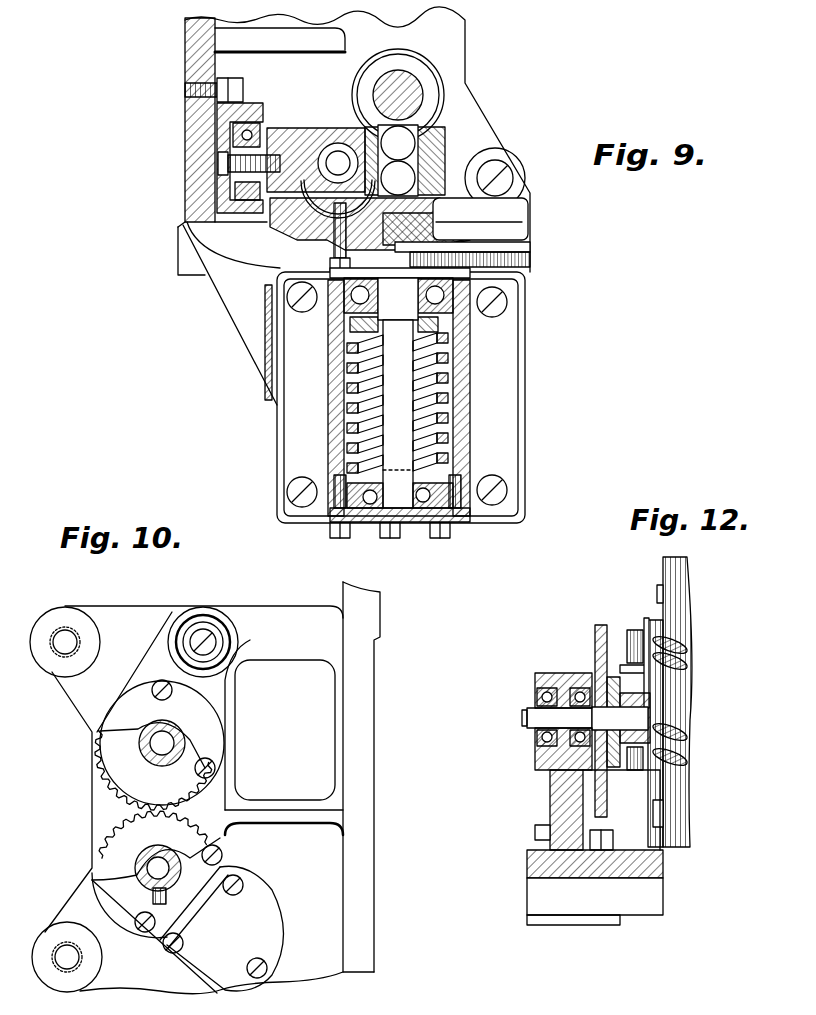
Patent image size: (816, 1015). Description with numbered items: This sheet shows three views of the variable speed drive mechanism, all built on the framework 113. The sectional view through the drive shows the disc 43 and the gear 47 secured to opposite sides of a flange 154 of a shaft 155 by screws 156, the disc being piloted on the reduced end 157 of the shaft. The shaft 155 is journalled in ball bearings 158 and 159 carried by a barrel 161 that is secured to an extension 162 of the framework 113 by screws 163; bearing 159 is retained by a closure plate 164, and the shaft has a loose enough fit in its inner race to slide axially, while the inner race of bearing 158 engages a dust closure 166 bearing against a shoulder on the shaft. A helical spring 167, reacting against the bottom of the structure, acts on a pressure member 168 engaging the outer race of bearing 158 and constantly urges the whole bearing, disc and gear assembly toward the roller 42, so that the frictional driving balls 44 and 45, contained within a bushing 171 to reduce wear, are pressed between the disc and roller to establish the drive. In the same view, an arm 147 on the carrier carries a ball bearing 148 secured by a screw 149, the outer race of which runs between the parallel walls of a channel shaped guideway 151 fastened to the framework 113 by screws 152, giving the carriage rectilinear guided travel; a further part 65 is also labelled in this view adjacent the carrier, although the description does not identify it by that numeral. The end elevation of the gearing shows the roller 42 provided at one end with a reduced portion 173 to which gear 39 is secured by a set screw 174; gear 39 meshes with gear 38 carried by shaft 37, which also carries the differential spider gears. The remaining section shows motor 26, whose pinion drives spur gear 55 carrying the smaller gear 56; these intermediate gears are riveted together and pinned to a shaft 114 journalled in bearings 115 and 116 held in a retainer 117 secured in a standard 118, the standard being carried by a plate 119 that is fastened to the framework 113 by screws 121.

In FIG. 9, the framework 113 is at (190, 45).
In FIG. 10, the framework 113 is at (363, 912).
In FIG. 12, the framework 113 is at (567, 903).
In FIG. 9, the screws 152 is at (188, 90).
In FIG. 9, the channel shaped guideway 151 is at (217, 117).
In FIG. 9, the screw 149 is at (218, 163).
In FIG. 9, the ball bearing 148 is at (237, 187).
In FIG. 9, the arm 147 is at (268, 133).
In FIG. 9, the shaft hub 65 is at (338, 157).
In FIG. 9, the roller 42 is at (405, 78).
In FIG. 9, the frictional driving ball 45 is at (405, 127).
In FIG. 9, the bushing 171 is at (398, 173).
In FIG. 9, the frictional driving ball 44 is at (430, 158).
In FIG. 9, the reduced end 157 is at (430, 217).
In FIG. 9, the disc 43 is at (512, 215).
In FIG. 9, the flange 154 is at (518, 247).
In FIG. 9, the gear 47 is at (530, 258).
In FIG. 9, the screws 156 is at (270, 267).
In FIG. 9, the dust closure 166 is at (477, 277).
In FIG. 9, the ball bearing 158 is at (347, 300).
In FIG. 9, the pressure member 168 is at (348, 328).
In FIG. 9, the screws 163 is at (288, 300).
In FIG. 9, the extension 162 is at (255, 352).
In FIG. 9, the helical spring 167 is at (348, 397).
In FIG. 9, the shaft 155 is at (400, 385).
In FIG. 9, the barrel 161 is at (462, 427).
In FIG. 9, the closure plate 164 is at (360, 527).
In FIG. 9, the ball bearing 159 is at (423, 500).
In FIG. 10, the gear 38 is at (115, 770).
In FIG. 10, the shaft 37 is at (160, 745).
In FIG. 10, the gear 39 is at (117, 842).
In FIG. 10, the reduced portion 173 is at (160, 873).
In FIG. 10, the set screw 174 is at (168, 893).
In FIG. 12, the spur gear 55 is at (595, 640).
In FIG. 12, the gear 56 is at (617, 663).
In FIG. 12, the motor 26 is at (677, 620).
In FIG. 12, the bearing 116 is at (580, 693).
In FIG. 12, the bearing 115 is at (545, 693).
In FIG. 12, the shaft 114 is at (633, 726).
In FIG. 12, the retainer 117 is at (537, 760).
In FIG. 12, the standard 118 is at (560, 803).
In FIG. 12, the screws 121 is at (603, 850).
In FIG. 12, the plate 119 is at (653, 868).